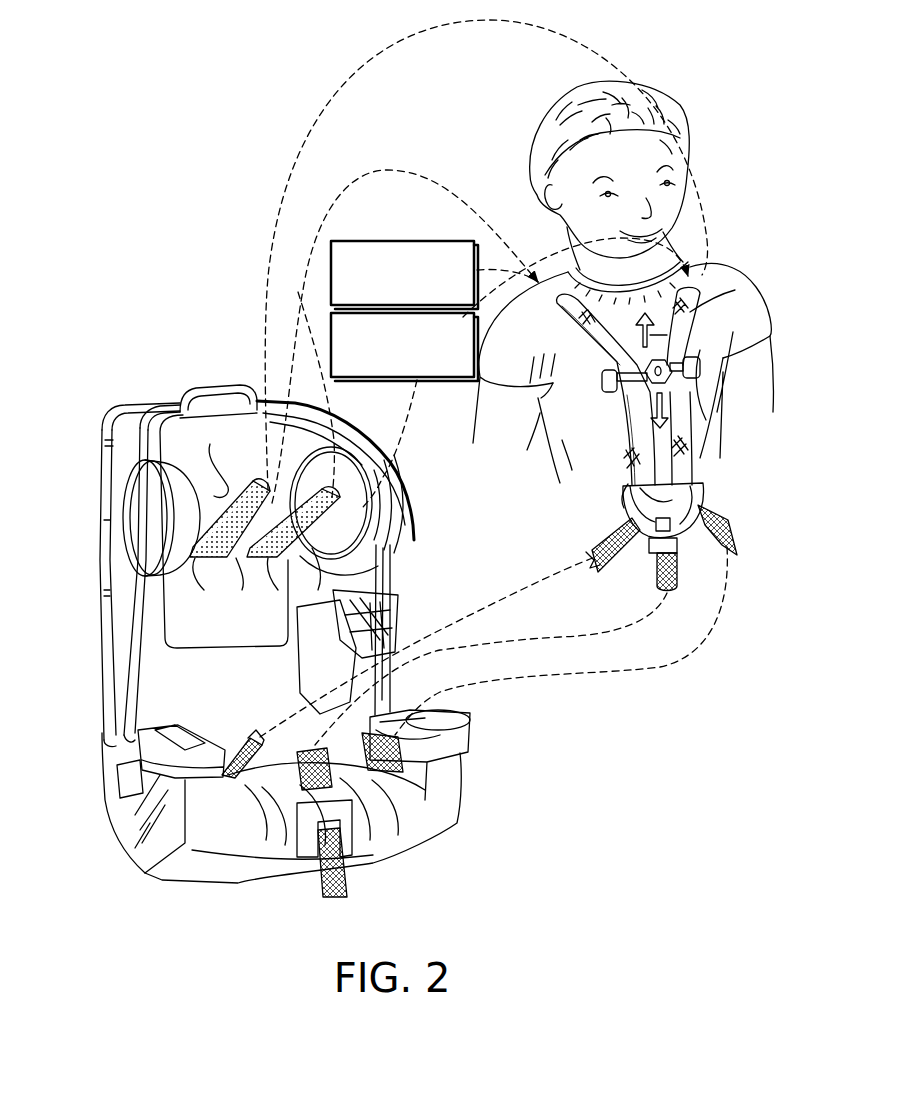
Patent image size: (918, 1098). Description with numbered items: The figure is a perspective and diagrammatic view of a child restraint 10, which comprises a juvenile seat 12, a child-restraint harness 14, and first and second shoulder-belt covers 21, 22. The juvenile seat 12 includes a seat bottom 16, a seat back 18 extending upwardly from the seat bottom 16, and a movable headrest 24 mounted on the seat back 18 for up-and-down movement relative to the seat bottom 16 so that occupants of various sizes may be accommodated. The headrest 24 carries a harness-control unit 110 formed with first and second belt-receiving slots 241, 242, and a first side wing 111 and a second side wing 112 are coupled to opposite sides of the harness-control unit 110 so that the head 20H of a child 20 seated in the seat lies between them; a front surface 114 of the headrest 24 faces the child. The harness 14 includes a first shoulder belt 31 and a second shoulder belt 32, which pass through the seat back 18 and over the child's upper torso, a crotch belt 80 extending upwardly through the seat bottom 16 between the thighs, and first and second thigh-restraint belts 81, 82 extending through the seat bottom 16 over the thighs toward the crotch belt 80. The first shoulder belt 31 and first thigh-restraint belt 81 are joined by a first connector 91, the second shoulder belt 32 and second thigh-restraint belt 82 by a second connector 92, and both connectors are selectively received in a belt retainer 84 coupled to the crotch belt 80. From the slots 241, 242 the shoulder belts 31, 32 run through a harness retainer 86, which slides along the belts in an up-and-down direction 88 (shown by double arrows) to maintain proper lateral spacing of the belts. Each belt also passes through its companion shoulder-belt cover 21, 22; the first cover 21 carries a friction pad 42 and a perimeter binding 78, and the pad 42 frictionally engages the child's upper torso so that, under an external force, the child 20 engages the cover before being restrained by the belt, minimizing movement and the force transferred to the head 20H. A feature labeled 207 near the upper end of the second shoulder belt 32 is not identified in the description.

The child restraint 10 is at (183, 149).
The child 20 is at (708, 105).
The head of child 20H is at (575, 163).
The first shoulder-belt cover 21 is at (371, 241).
The second shoulder-belt cover 22 is at (430, 372).
The upper end of shoulder belt 207 is at (725, 282).
The second shoulder belt 32 is at (712, 297).
The first shoulder belt 31 is at (603, 366).
The up-and-down direction 88 is at (702, 400).
The child-restraint harness 14 is at (712, 405).
The harness retainer 86 is at (612, 400).
The second connector 92 is at (690, 498).
The second thigh-restraint belt 82 is at (720, 522).
The first connector 91 is at (630, 508).
The first thigh-restraint belt 81 is at (594, 552).
The belt retainer 84 is at (680, 532).
The crotch belt 80 is at (678, 572).
The juvenile seat 12 is at (97, 455).
The movable headrest 24 is at (165, 412).
The front surface of movable headrest 114 is at (210, 457).
The perimeter binding 78 is at (218, 532).
The first side wing 111 is at (145, 540).
The second side wing 112 is at (410, 550).
The friction pad 42 is at (295, 603).
The first belt-receiving slot 241 is at (230, 665).
The second belt-receiving slot 242 is at (230, 665).
The harness-control unit 110 is at (230, 665).
The seat back 18 is at (95, 655).
The seat bottom 16 is at (100, 808).